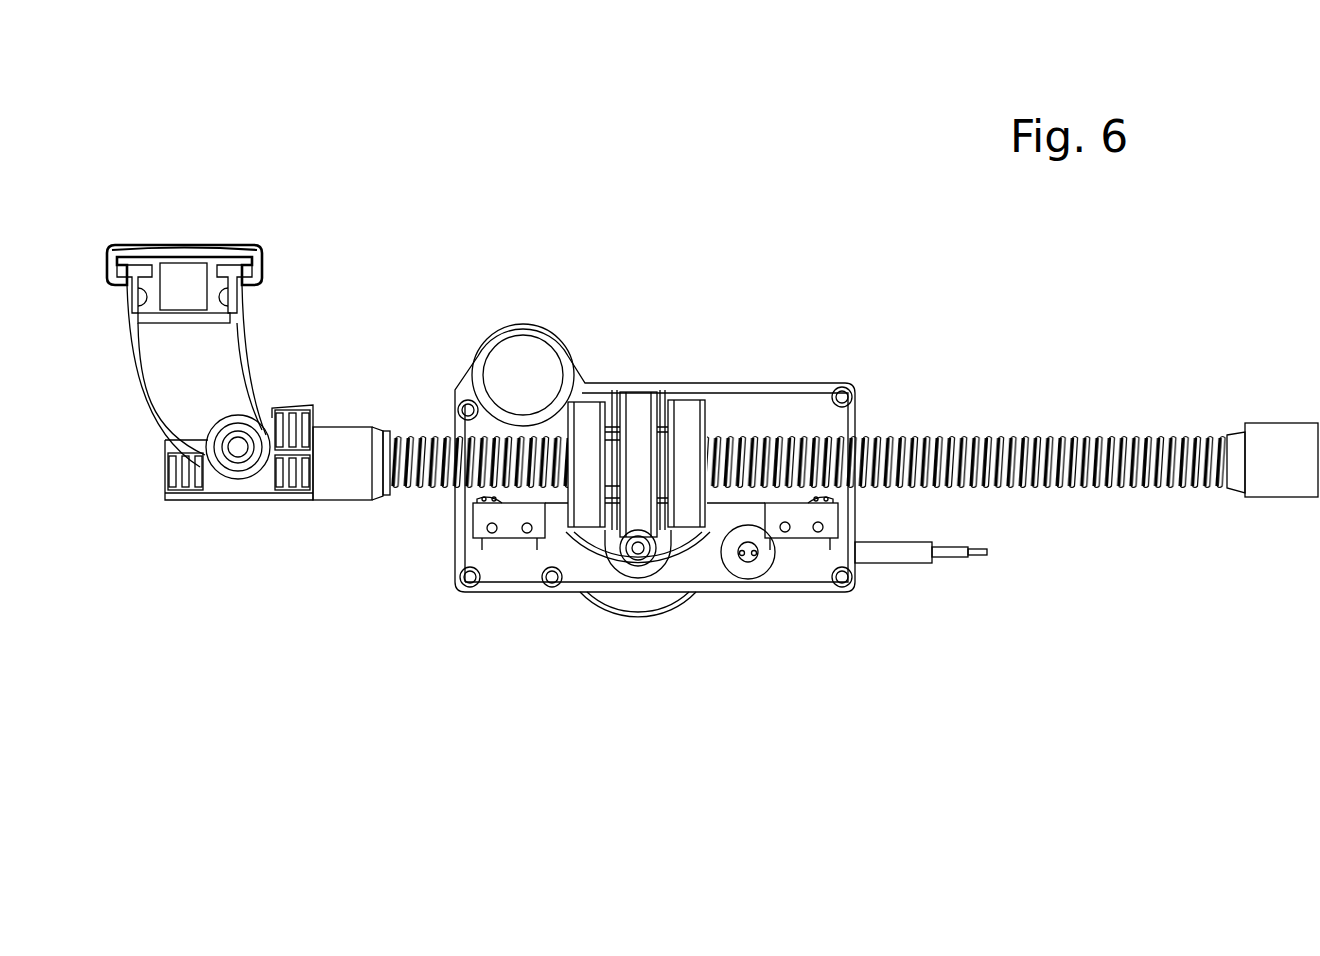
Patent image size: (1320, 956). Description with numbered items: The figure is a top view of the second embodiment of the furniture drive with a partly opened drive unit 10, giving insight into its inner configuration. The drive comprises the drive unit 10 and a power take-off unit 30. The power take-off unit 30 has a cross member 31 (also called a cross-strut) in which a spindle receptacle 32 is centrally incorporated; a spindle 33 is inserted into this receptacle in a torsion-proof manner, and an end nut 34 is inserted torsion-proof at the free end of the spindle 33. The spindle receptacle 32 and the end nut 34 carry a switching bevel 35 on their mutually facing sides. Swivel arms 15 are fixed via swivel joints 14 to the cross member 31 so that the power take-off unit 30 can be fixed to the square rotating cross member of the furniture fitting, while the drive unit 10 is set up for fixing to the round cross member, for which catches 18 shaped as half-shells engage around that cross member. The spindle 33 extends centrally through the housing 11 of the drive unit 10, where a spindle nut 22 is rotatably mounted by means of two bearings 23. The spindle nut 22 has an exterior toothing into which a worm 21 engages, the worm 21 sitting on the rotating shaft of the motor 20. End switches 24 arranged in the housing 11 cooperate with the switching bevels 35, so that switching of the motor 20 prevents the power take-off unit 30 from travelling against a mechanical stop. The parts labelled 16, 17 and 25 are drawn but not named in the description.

The drive unit 10 is at (1058, 585).
The housing 11 is at (517, 590).
The swivel joints 14 is at (236, 452).
The swivel arms 15 is at (193, 363).
The cap 16 is at (238, 257).
The insert 17 is at (172, 285).
The catches 18 is at (528, 324).
The motor 20 is at (650, 615).
The worm 21 is at (642, 552).
The spindle nut 22 is at (640, 400).
The bearings 23 is at (583, 405).
The end switches 24 is at (492, 507).
The pin 25 is at (920, 552).
The power take-off unit 30 is at (218, 642).
The cross member 31 is at (163, 462).
The spindle receptacle 32 is at (345, 497).
The spindle 33 is at (945, 445).
The end nut 34 is at (1277, 440).
The switching bevel 35 is at (384, 438).